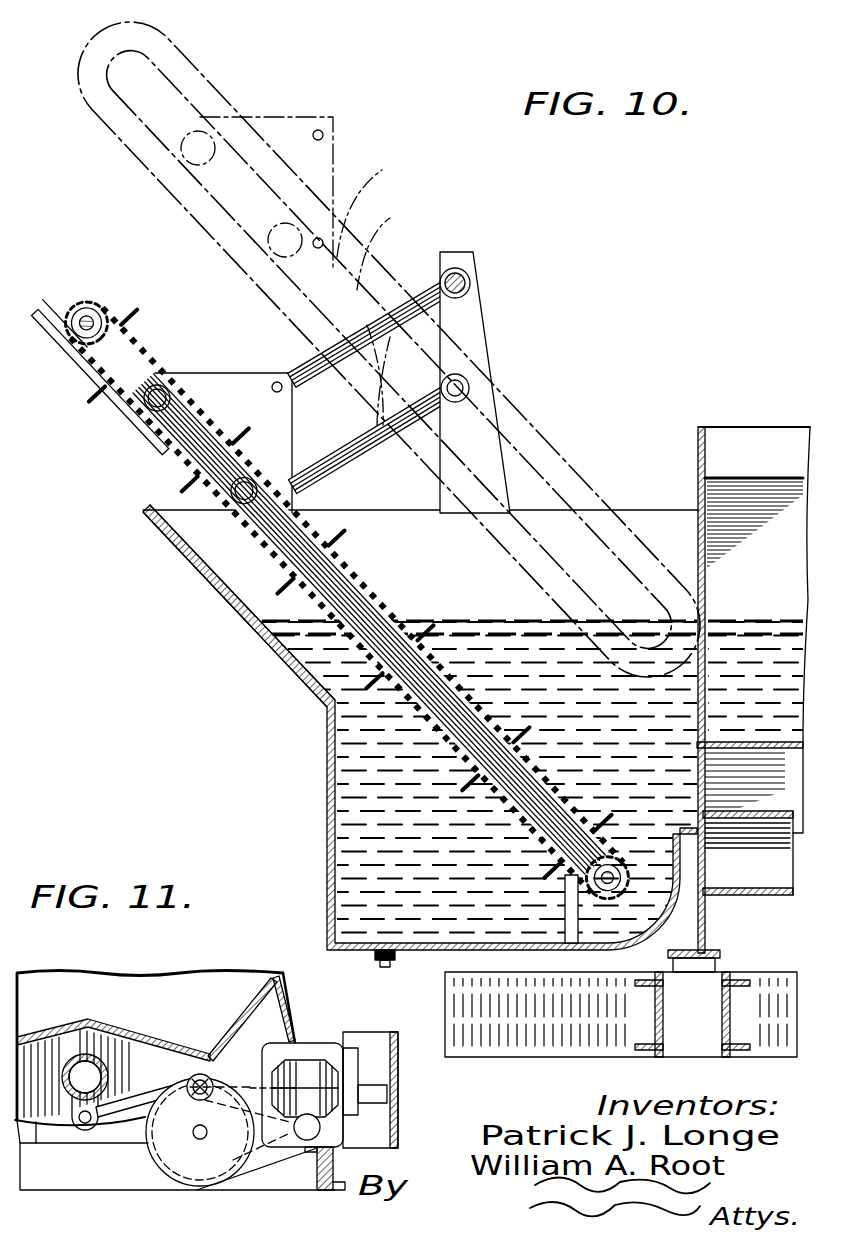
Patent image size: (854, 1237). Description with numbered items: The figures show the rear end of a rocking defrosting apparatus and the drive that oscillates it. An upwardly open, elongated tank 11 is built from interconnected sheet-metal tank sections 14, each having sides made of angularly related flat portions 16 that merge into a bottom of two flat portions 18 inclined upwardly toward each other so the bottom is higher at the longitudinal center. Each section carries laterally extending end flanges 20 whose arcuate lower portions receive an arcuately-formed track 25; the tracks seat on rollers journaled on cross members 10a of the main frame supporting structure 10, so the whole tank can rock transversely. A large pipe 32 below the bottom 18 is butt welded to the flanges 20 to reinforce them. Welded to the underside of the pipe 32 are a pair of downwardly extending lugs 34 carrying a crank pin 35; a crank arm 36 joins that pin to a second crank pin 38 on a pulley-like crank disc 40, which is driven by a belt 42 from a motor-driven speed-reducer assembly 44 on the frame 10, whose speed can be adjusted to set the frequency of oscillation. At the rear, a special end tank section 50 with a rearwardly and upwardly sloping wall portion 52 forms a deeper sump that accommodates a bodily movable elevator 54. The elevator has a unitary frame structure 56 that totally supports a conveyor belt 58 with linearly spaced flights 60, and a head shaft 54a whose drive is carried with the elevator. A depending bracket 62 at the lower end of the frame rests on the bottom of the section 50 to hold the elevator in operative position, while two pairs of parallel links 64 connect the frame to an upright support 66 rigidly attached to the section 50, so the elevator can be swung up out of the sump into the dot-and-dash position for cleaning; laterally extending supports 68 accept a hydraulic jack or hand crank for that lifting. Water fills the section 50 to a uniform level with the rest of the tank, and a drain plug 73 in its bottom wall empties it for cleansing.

In FIG. 10, the main frame supporting structure 10 is at (580, 1035).
In FIG. 11, the main frame supporting structure 10 is at (320, 1168).
In FIG. 11, the cross members 10a is at (97, 1180).
In FIG. 10, the tank 11 is at (778, 424).
In FIG. 11, the tank 11 is at (286, 994).
In FIG. 11, the tank sections 14 is at (195, 990).
In FIG. 10, the flat portions 16 is at (715, 530).
In FIG. 11, the flat portions 16 is at (235, 1035).
In FIG. 10, the bottom flat portions 18 is at (795, 793).
In FIG. 11, the bottom flat portions 18 is at (65, 1033).
In FIG. 10, the flange 20 is at (698, 446).
In FIG. 11, the track 25 is at (42, 1127).
In FIG. 10, the pipe 32 is at (775, 895).
In FIG. 11, the pipe 32 is at (97, 1073).
In FIG. 11, the lugs 34 is at (62, 1102).
In FIG. 11, the crank pin 35 is at (85, 1125).
In FIG. 11, the crank arm 36 is at (125, 1112).
In FIG. 11, the crank pin 38 is at (190, 1109).
In FIG. 11, the crank disc 40 is at (200, 1165).
In FIG. 11, the belt 42 is at (265, 1178).
In FIG. 11, the motor-driven speed-reducer assembly 44 is at (300, 1060).
In FIG. 10, the end tank section 50 is at (328, 776).
In FIG. 10, the sloping wall portion 52 is at (238, 608).
In FIG. 10, the elevator 54 is at (243, 283).
In FIG. 10, the head shaft 54a is at (95, 300).
In FIG. 10, the frame structure 56 is at (318, 520).
In FIG. 10, the conveyor belt 58 is at (357, 577).
In FIG. 10, the flights 60 is at (240, 420).
In FIG. 10, the depending bracket 62 is at (568, 902).
In FIG. 10, the parallel links 64 is at (356, 178).
In FIG. 10, the upright support 66 is at (482, 338).
In FIG. 10, the laterally-extending supports 68 is at (250, 478).
In FIG. 10, the drain plug 73 is at (388, 955).